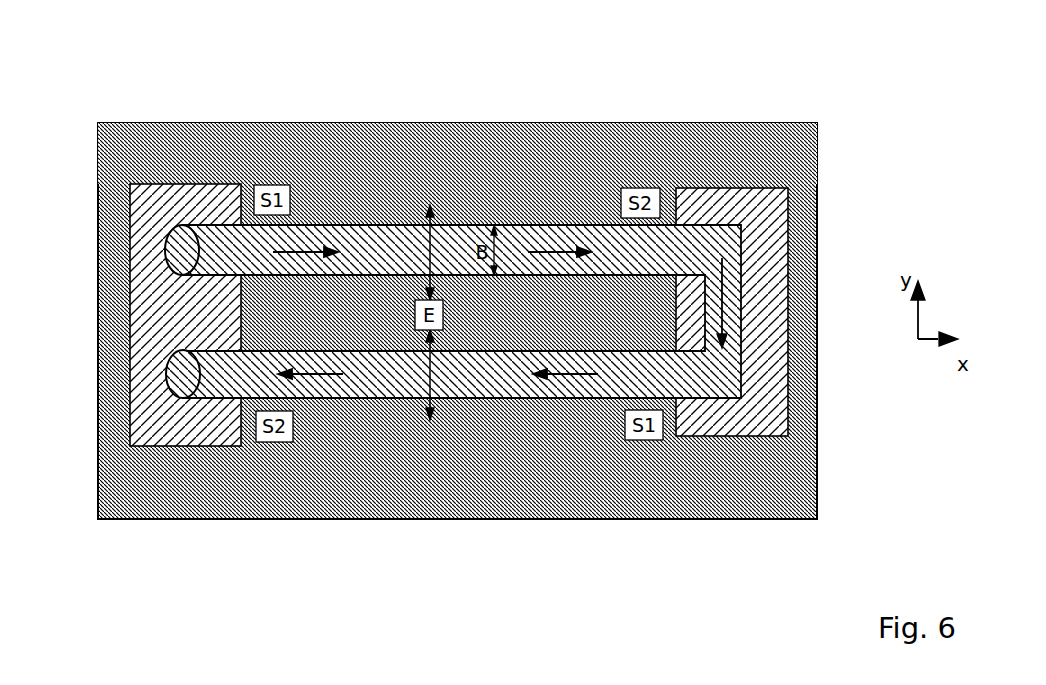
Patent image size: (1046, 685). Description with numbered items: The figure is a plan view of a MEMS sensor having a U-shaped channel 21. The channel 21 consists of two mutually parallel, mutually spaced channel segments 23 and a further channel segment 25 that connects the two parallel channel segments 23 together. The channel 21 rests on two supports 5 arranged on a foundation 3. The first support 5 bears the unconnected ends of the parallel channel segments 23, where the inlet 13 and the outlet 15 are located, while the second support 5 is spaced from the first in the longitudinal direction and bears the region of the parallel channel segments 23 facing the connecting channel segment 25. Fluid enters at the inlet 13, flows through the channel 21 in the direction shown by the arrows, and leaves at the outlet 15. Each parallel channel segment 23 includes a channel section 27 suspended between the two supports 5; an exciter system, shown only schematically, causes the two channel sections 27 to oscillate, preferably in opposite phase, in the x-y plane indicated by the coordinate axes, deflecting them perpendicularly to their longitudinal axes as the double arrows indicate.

The foundation 3 is at (228, 480).
The support 5 is at (130, 293).
The inlet 13 is at (170, 237).
The outlet 15 is at (173, 388).
The U-shaped channel 21 is at (320, 178).
The channel segment 23 is at (672, 233).
The channel segment 25 is at (730, 290).
The channel section 27 is at (430, 240).